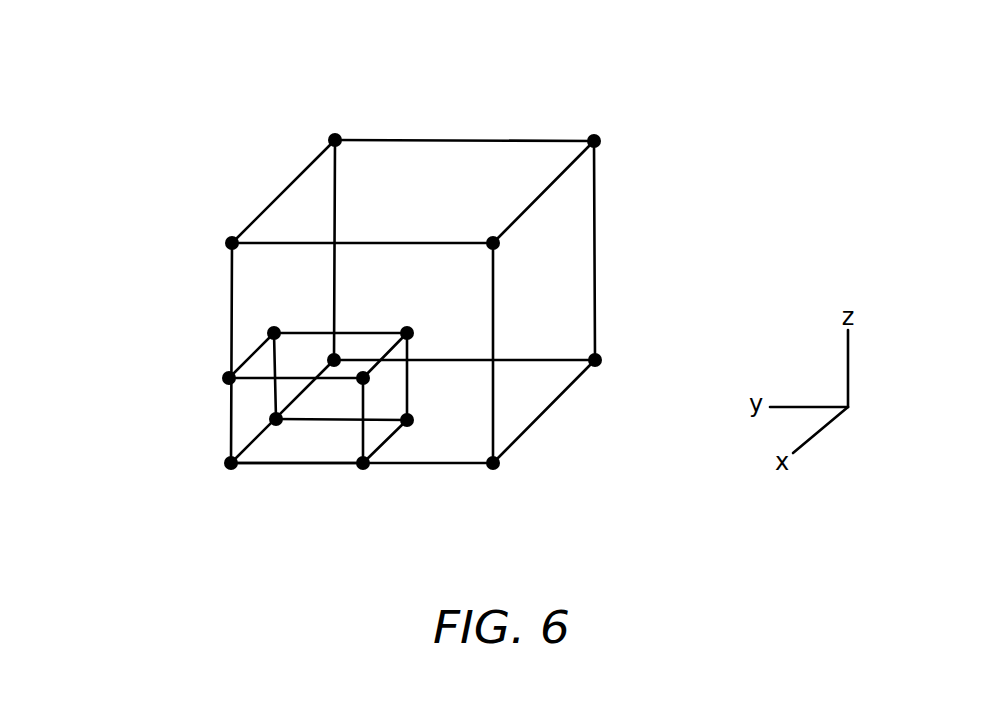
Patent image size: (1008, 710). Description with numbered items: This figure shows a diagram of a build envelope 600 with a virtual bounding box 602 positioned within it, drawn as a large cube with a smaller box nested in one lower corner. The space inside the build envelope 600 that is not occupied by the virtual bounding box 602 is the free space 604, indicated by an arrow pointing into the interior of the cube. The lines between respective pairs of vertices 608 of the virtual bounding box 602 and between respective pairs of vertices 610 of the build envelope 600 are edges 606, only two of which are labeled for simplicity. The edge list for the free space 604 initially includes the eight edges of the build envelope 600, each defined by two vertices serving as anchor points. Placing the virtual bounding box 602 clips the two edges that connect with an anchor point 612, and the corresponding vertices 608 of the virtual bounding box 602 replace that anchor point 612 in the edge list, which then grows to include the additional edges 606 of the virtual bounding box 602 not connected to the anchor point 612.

The build envelope 600 is at (283, 187).
The virtual bounding box 602 is at (230, 440).
The free space 604 is at (445, 279).
The edges 606 is at (380, 363).
The vertices of the virtual bounding box 608 is at (270, 331).
The vertices of the build envelope 610 is at (590, 138).
The anchor point 612 is at (232, 472).